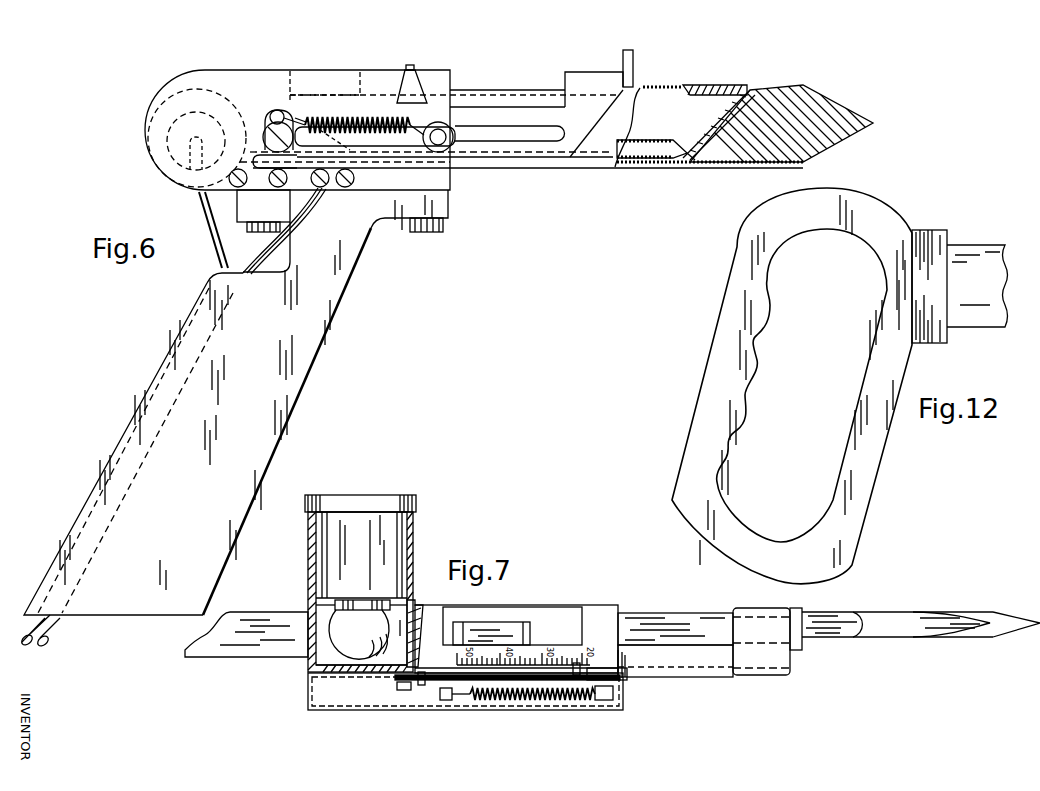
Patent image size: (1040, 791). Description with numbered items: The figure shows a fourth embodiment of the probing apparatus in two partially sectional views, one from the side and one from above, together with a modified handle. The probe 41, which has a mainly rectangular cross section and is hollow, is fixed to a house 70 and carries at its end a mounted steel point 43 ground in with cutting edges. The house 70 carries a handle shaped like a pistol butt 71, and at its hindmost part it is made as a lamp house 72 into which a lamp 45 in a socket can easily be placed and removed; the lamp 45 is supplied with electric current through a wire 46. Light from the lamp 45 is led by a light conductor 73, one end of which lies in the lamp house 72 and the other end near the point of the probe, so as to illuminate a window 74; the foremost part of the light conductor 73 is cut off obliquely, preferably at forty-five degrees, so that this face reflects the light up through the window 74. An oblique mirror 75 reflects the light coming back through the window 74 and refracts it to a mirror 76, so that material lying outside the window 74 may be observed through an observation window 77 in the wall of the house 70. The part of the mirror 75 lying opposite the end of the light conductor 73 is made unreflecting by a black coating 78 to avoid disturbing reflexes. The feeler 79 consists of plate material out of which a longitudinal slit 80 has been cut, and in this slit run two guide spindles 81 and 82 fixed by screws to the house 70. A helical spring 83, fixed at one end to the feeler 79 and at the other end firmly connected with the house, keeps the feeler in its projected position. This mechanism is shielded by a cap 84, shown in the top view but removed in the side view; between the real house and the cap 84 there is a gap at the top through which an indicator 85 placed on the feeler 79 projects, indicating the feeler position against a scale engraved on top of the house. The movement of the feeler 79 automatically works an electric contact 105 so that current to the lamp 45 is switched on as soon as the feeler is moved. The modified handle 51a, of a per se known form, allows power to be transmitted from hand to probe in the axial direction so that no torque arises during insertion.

In FIG. 6, the house 70 is at (309, 121).
In FIG. 6, the indicator 85 is at (456, 88).
In FIG. 6, the light conductor 73 is at (224, 144).
In FIG. 7, the light conductor 73 is at (411, 606).
In FIG. 6, the observation window 77 is at (330, 78).
In FIG. 7, the observation window 77 is at (513, 628).
In FIG. 6, the mirror 76 is at (305, 109).
In FIG. 6, the guide spindle 82 is at (269, 118).
In FIG. 7, the guide spindle 82 is at (437, 687).
In FIG. 6, the helical spring 83 is at (392, 128).
In FIG. 6, the guide spindle 81 is at (450, 125).
In FIG. 7, the guide spindle 81 is at (627, 680).
In FIG. 6, the longitudinal slit 80 is at (512, 137).
In FIG. 6, the feeler 79 is at (498, 115).
In FIG. 7, the feeler 79 is at (700, 674).
In FIG. 6, the collar 51a is at (633, 60).
In FIG. 7, the collar 51a is at (802, 647).
In FIG. 6, the probe 41 is at (674, 87).
In FIG. 6, the window 74 is at (732, 87).
In FIG. 7, the window 74 is at (894, 630).
In FIG. 6, the oblique mirror 75 is at (730, 116).
In FIG. 6, the black coating 78 is at (690, 150).
In FIG. 6, the steel point 43 is at (810, 103).
In FIG. 7, the steel point 43 is at (977, 633).
In FIG. 6, the electric contact 105 is at (243, 164).
In FIG. 7, the electric contact 105 is at (420, 677).
In FIG. 6, the handle shaped like a pistol butt 71 is at (347, 257).
In FIG. 6, the wire 46 is at (52, 626).
In FIG. 7, the lamp house 72 is at (413, 525).
In FIG. 7, the lamp 45 is at (366, 635).
In FIG. 7, the cap 84 is at (308, 690).